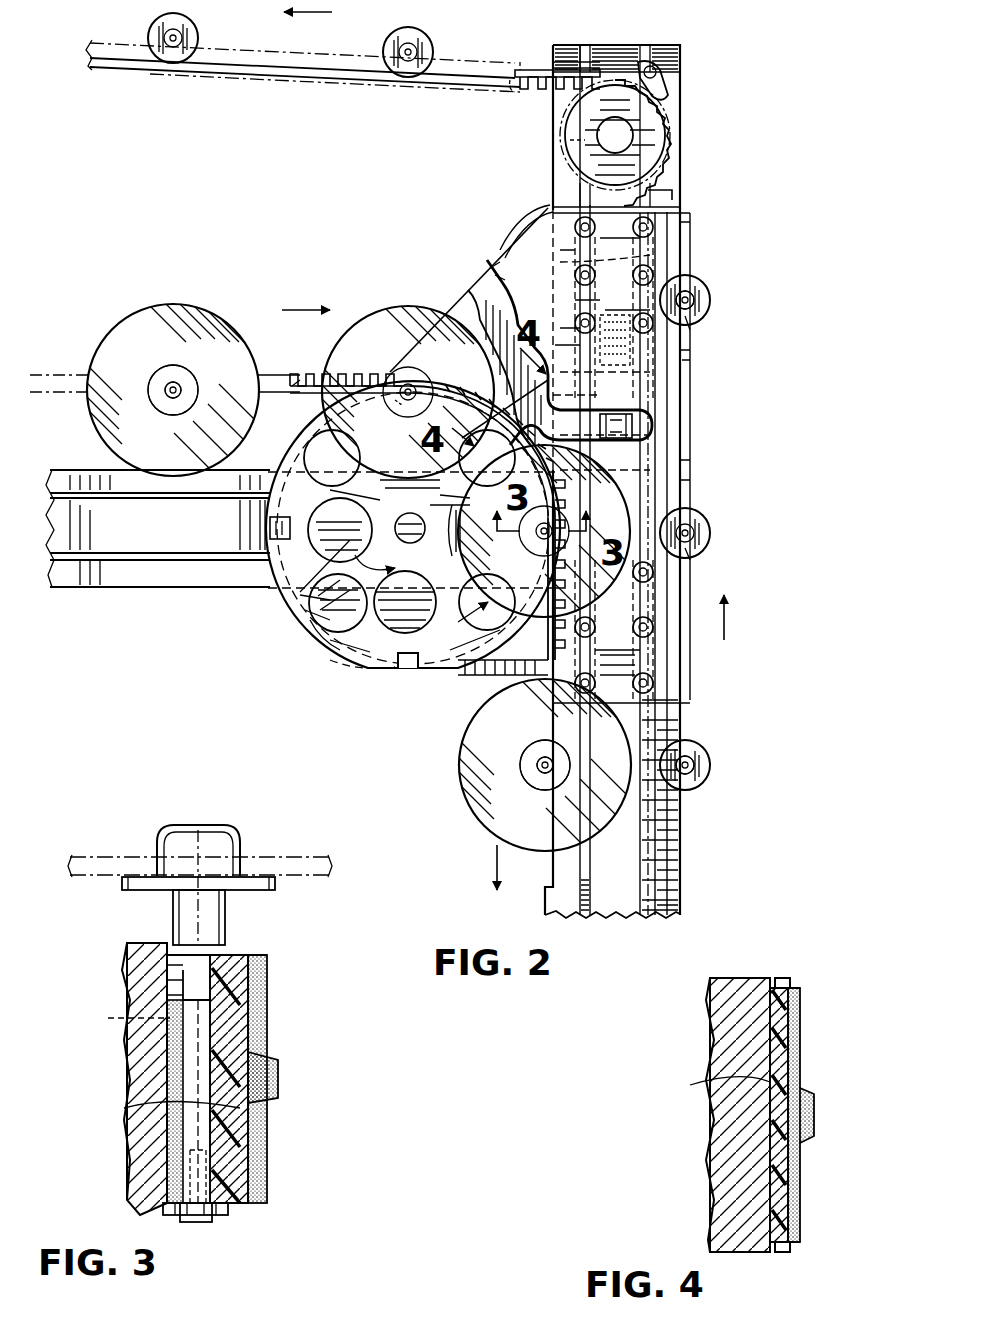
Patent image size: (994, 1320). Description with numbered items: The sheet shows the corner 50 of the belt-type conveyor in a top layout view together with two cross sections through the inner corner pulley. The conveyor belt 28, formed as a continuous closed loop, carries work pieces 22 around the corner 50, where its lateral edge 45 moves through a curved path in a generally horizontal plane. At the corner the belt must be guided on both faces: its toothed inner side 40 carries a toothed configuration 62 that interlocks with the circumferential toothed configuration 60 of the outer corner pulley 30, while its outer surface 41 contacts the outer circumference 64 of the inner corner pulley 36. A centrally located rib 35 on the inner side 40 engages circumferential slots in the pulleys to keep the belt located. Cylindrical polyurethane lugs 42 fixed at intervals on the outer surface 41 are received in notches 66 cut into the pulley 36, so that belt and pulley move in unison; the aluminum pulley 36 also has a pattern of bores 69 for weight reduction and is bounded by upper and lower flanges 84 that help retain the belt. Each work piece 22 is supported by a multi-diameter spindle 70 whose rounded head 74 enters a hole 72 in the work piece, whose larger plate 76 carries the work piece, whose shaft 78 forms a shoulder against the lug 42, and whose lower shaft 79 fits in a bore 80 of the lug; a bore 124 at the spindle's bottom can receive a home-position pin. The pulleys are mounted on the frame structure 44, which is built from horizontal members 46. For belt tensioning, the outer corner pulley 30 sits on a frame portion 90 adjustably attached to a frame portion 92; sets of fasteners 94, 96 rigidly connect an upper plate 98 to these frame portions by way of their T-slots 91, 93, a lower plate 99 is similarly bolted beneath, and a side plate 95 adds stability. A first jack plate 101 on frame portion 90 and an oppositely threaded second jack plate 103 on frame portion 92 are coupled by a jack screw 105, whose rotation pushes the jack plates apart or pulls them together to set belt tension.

In FIG. 2, the work pieces 22 is at (228, 305).
In FIG. 3, the work pieces 22 is at (100, 852).
In FIG. 2, the conveyor belt 28 is at (690, 106).
In FIG. 3, the conveyor belt 28 is at (252, 952).
In FIG. 4, the conveyor belt 28 is at (780, 982).
In FIG. 2, the outer corner pulley 30 is at (565, 135).
In FIG. 3, the rib 35 is at (280, 1062).
In FIG. 4, the rib 35 is at (814, 1130).
In FIG. 2, the inner corner pulley 36 is at (285, 612).
In FIG. 3, the inner corner pulley 36 is at (152, 940).
In FIG. 4, the inner corner pulley 36 is at (742, 975).
In FIG. 2, the inner side 40 is at (550, 88).
In FIG. 3, the inner side 40 is at (215, 1125).
In FIG. 4, the inner side 40 is at (796, 1082).
In FIG. 2, the outer surface 41 is at (525, 68).
In FIG. 3, the outer surface 41 is at (160, 1105).
In FIG. 4, the outer surface 41 is at (730, 1085).
In FIG. 2, the lugs 42 is at (640, 68).
In FIG. 3, the lugs 42 is at (180, 1045).
In FIG. 2, the frame structure 44 is at (170, 590).
In FIG. 2, the lateral edge 45 is at (565, 46).
In FIG. 3, the lateral edge 45 is at (270, 960).
In FIG. 4, the lateral edge 45 is at (800, 994).
In FIG. 2, the horizontal members 46 is at (155, 527).
In FIG. 2, the corner 50 is at (412, 212).
In FIG. 2, the circumferential toothed configuration 60 is at (660, 95).
In FIG. 2, the toothed configuration 62 is at (675, 192).
In FIG. 2, the outer circumference 64 is at (380, 680).
In FIG. 4, the outer circumference 64 is at (778, 1030).
In FIG. 2, the notches 66 is at (408, 670).
In FIG. 3, the notches 66 is at (230, 1210).
In FIG. 2, the bores 69 is at (326, 548).
In FIG. 2, the spindle 70 is at (200, 28).
In FIG. 3, the spindle 70 is at (218, 820).
In FIG. 2, the hole 72 is at (192, 384).
In FIG. 2, the head 74 is at (170, 400).
In FIG. 3, the head 74 is at (186, 835).
In FIG. 2, the plate 76 is at (708, 320).
In FIG. 3, the plate 76 is at (122, 882).
In FIG. 3, the shaft 78 is at (228, 922).
In FIG. 3, the lower shaft 79 is at (195, 982).
In FIG. 3, the bore 80 is at (180, 1005).
In FIG. 2, the flanges 84 is at (305, 642).
In FIG. 4, the flanges 84 is at (792, 982).
In FIG. 2, the frame portion 90 is at (685, 56).
In FIG. 2, the T-slot 91 is at (548, 210).
In FIG. 2, the frame portion 92 is at (682, 860).
In FIG. 2, the T-slot 93 is at (584, 916).
In FIG. 2, the fasteners 94 is at (602, 262).
In FIG. 2, the side plate 95 is at (700, 565).
In FIG. 2, the fasteners 96 is at (655, 630).
In FIG. 2, the upper plate 98 is at (510, 262).
In FIG. 2, the lower plate 99 is at (478, 292).
In FIG. 2, the first jack plate 101 is at (692, 358).
In FIG. 2, the second jack plate 103 is at (692, 480).
In FIG. 2, the jack screw 105 is at (633, 395).
In FIG. 3, the bore 124 is at (196, 1228).